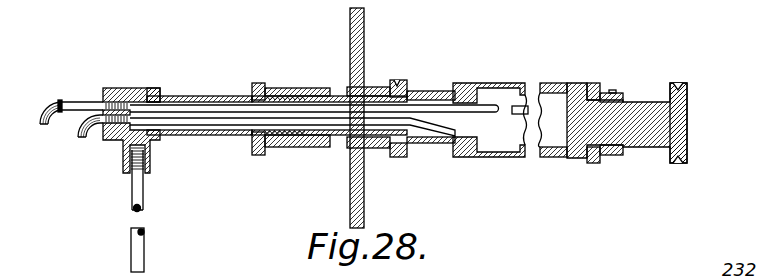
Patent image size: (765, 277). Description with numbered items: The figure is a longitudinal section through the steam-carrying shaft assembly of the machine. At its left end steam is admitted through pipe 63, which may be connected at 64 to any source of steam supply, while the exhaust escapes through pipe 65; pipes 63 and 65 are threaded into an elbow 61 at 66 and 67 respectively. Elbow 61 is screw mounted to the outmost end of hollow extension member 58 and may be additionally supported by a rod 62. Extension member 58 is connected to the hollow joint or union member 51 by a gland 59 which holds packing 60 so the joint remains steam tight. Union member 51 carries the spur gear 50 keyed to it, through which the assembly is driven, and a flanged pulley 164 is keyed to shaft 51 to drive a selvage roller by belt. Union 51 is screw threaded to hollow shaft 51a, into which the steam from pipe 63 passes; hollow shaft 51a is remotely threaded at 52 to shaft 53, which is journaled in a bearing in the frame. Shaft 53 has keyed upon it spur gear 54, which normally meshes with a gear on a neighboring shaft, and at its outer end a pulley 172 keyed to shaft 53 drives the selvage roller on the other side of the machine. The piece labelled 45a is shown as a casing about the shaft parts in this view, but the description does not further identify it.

The steam supply connection 64 is at (52, 103).
The threaded connection of exhaust pipe 67 is at (110, 138).
The threaded connection of steam pipe 66 is at (110, 97).
The elbow 61 is at (147, 90).
The rod 62 is at (140, 192).
The steam pipe 63 is at (188, 96).
The hollow extension member 58 is at (228, 97).
The exhaust pipe 65 is at (223, 126).
The gland 59 is at (260, 84).
The packing 60 is at (288, 92).
The spur gear 50 is at (365, 54).
The flanged pulley 164 is at (397, 82).
The hollow union member 51 is at (432, 91).
The casing 45a is at (465, 85).
The hollow shaft 51a is at (521, 84).
The threaded connection to shaft 52 is at (581, 84).
The spur gear 54 is at (598, 90).
The shaft 53 is at (645, 96).
The pulley 172 is at (690, 84).